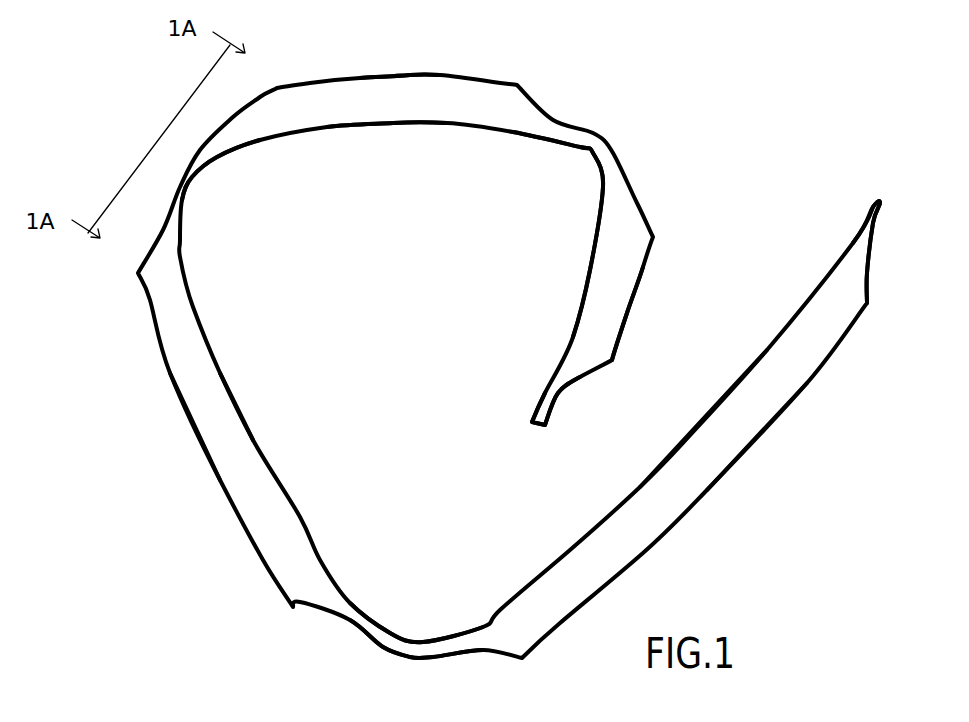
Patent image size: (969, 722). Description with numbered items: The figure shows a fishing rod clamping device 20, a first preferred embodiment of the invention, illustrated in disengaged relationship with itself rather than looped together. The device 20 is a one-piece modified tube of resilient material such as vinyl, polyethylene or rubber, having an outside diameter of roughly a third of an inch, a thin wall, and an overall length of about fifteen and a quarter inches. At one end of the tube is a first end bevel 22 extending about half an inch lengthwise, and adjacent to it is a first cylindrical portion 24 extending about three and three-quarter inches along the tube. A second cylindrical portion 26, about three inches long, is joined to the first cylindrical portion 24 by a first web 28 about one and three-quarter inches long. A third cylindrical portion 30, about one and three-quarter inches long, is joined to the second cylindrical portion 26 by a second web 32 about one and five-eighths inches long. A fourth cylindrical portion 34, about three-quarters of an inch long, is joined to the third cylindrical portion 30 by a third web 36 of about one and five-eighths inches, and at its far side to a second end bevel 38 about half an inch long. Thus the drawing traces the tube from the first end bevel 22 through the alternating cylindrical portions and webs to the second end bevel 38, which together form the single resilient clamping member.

The fishing rod clamping device 20 is at (755, 341).
The first end bevel 22 is at (855, 245).
The first cylindrical portion 24 is at (705, 470).
The second cylindrical portion 26 is at (228, 452).
The first web 28 is at (415, 650).
The third cylindrical portion 30 is at (393, 103).
The second web 32 is at (187, 173).
The fourth cylindrical portion 34 is at (612, 293).
The third web 36 is at (598, 150).
The second end bevel 38 is at (555, 390).